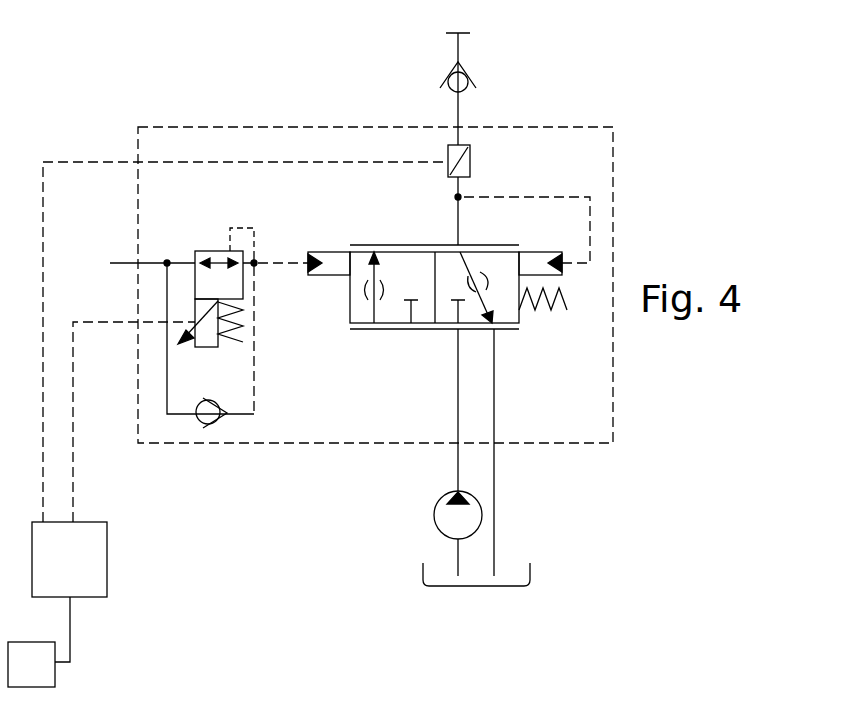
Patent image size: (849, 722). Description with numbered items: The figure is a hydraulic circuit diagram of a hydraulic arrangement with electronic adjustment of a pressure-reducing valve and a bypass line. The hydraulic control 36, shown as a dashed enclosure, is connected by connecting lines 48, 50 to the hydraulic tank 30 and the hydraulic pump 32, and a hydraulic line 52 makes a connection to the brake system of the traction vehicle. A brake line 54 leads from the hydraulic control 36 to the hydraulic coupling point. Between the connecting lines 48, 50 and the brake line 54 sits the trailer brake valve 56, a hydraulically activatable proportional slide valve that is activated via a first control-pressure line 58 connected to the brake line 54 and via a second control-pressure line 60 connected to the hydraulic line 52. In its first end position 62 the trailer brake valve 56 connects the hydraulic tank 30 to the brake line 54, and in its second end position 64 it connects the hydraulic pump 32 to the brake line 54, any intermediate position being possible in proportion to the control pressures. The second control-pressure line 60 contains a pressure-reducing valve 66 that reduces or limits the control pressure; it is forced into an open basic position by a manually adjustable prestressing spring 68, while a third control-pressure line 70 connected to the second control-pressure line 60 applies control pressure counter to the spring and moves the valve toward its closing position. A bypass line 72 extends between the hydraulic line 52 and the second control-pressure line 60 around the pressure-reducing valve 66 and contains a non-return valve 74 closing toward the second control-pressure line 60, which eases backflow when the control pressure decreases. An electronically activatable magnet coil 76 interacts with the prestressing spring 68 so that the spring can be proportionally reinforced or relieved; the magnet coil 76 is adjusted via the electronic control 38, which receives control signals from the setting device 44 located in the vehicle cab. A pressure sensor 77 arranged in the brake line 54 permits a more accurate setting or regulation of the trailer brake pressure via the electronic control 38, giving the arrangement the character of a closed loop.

The hydraulic tank 30 is at (530, 583).
The hydraulic pump 32 is at (447, 524).
The hydraulic control 36 is at (272, 443).
The electronic control 38 is at (240, 379).
The setting device 44 is at (39, 642).
The connecting line 48 is at (494, 482).
The connecting line 50 is at (458, 477).
The hydraulic line 52 is at (127, 263).
The brake line 54 is at (458, 112).
The trailer brake valve 56 is at (426, 320).
The first control-pressure line 58 is at (565, 195).
The second control-pressure line 60 is at (290, 265).
The first end position 62 is at (503, 298).
The second end position 64 is at (406, 272).
The pressure-reducing valve 66 is at (200, 251).
The prestressing spring 68 is at (240, 336).
The third control-pressure line 70 is at (240, 228).
The bypass line 72 is at (167, 368).
The non-return valve 74 is at (200, 425).
The magnet coil 76 is at (207, 347).
The pressure sensor 77 is at (470, 157).